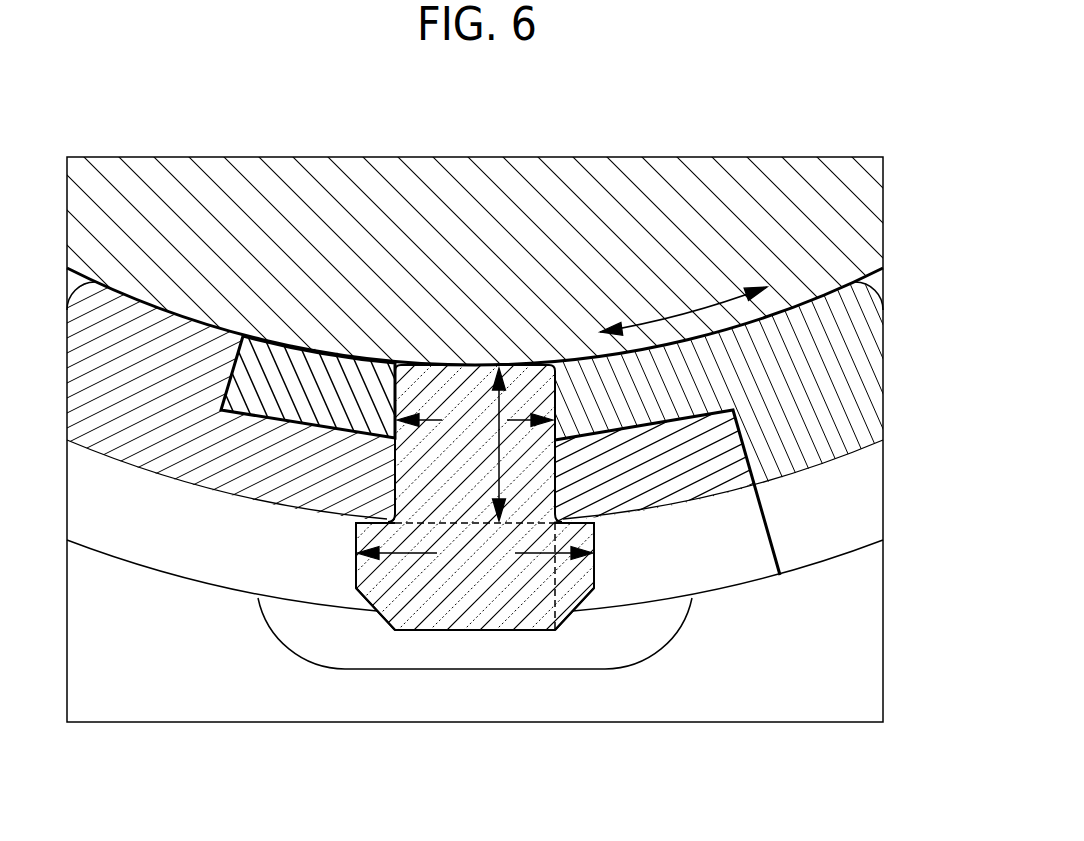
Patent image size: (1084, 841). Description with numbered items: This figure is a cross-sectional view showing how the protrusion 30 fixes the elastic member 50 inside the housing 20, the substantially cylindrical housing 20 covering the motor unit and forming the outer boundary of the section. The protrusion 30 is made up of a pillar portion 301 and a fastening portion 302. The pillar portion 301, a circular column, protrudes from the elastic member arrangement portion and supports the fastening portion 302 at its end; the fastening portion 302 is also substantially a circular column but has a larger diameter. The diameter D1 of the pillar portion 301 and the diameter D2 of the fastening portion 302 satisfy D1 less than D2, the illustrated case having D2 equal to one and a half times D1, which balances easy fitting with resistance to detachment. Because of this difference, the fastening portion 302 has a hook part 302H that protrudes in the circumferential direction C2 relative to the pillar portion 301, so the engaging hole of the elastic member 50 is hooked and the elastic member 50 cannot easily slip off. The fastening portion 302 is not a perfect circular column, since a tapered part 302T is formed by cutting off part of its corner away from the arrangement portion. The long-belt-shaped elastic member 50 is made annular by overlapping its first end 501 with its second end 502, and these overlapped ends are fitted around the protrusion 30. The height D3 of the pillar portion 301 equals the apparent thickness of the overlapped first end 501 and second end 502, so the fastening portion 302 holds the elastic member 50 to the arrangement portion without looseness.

The housing 20 is at (817, 183).
The elastic member 50 is at (853, 360).
The first end 501 is at (316, 353).
The second end 502 is at (702, 468).
The protrusion 30 is at (488, 453).
The pillar portion 301 is at (428, 380).
The fastening portion 302 is at (443, 617).
The tapered part 302T is at (380, 615).
The hook part 302H is at (570, 592).
The diameter of the pillar portion D1 is at (476, 420).
The diameter of the fastening portion D2 is at (475, 553).
The height of the pillar portion D3 is at (505, 466).
The circumferential direction C2 is at (683, 306).